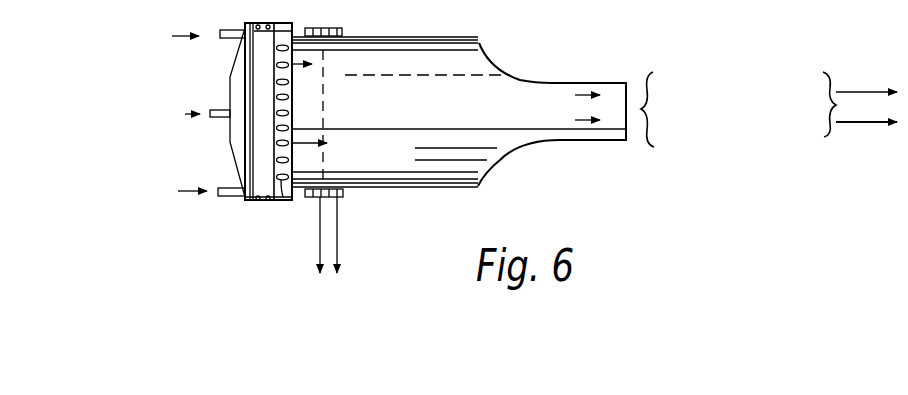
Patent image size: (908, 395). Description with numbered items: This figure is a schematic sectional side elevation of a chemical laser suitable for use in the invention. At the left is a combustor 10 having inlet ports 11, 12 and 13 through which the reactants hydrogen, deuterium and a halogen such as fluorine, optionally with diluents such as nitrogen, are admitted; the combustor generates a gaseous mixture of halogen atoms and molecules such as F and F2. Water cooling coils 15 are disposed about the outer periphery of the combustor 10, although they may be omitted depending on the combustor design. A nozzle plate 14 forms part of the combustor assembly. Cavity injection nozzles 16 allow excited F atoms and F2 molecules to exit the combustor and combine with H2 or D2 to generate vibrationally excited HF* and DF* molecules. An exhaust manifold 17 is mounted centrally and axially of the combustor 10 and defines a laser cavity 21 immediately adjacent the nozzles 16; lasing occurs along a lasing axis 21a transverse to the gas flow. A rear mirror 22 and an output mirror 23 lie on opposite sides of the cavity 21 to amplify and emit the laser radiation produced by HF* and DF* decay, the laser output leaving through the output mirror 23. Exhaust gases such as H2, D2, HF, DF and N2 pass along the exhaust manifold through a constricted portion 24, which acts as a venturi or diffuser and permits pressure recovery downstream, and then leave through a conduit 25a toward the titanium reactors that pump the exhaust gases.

The combustor 10 is at (256, 201).
The inlet port 11 is at (220, 118).
The inlet port 12 is at (235, 33).
The inlet port 13 is at (232, 192).
The nozzle plate 14 is at (270, 122).
The water cooling coils 15 is at (272, 25).
The cavity injection nozzles 16 is at (280, 67).
The exhaust manifold 17 is at (465, 38).
The laser cavity 21 is at (447, 114).
The lasing axis 21a is at (325, 117).
The rear mirror 22 is at (345, 32).
The output mirror 23 is at (332, 192).
The constricted portion 24 is at (562, 134).
The conduit 25a is at (870, 126).